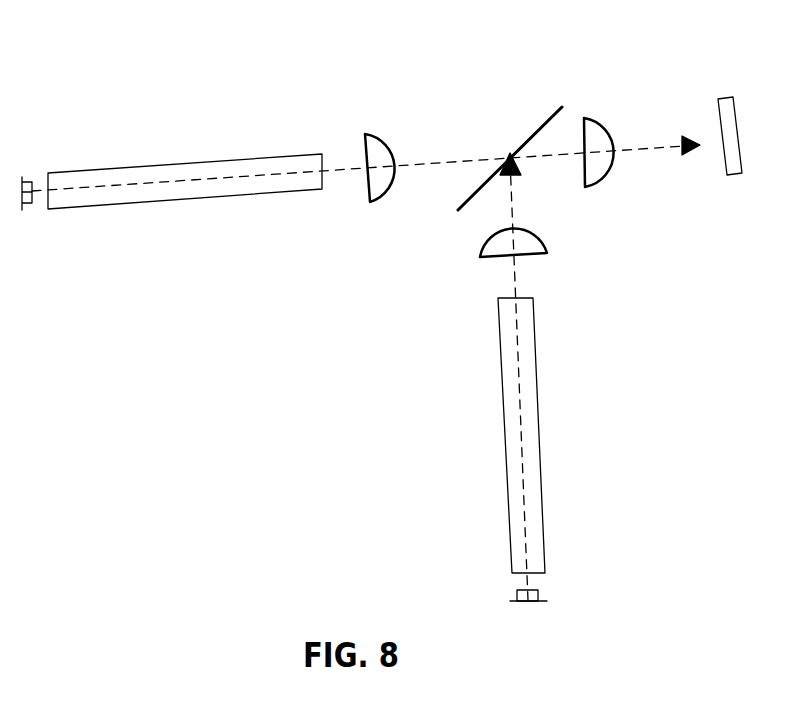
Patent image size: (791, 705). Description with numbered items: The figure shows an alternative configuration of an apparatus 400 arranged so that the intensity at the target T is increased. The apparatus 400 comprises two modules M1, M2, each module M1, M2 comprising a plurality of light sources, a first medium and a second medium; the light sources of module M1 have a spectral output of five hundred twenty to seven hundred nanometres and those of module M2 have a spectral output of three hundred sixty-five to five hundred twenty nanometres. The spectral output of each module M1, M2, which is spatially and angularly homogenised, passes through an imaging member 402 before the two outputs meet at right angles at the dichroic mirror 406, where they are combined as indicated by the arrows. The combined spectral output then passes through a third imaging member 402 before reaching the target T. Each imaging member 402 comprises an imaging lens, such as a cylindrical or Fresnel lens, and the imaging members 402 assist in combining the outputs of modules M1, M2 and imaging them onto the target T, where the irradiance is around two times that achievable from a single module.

The apparatus 400 is at (200, 38).
The imaging member 402 is at (488, 258).
The dichroic mirror 406 is at (525, 142).
The module M1 is at (146, 243).
The module M2 is at (368, 506).
The target T is at (735, 152).